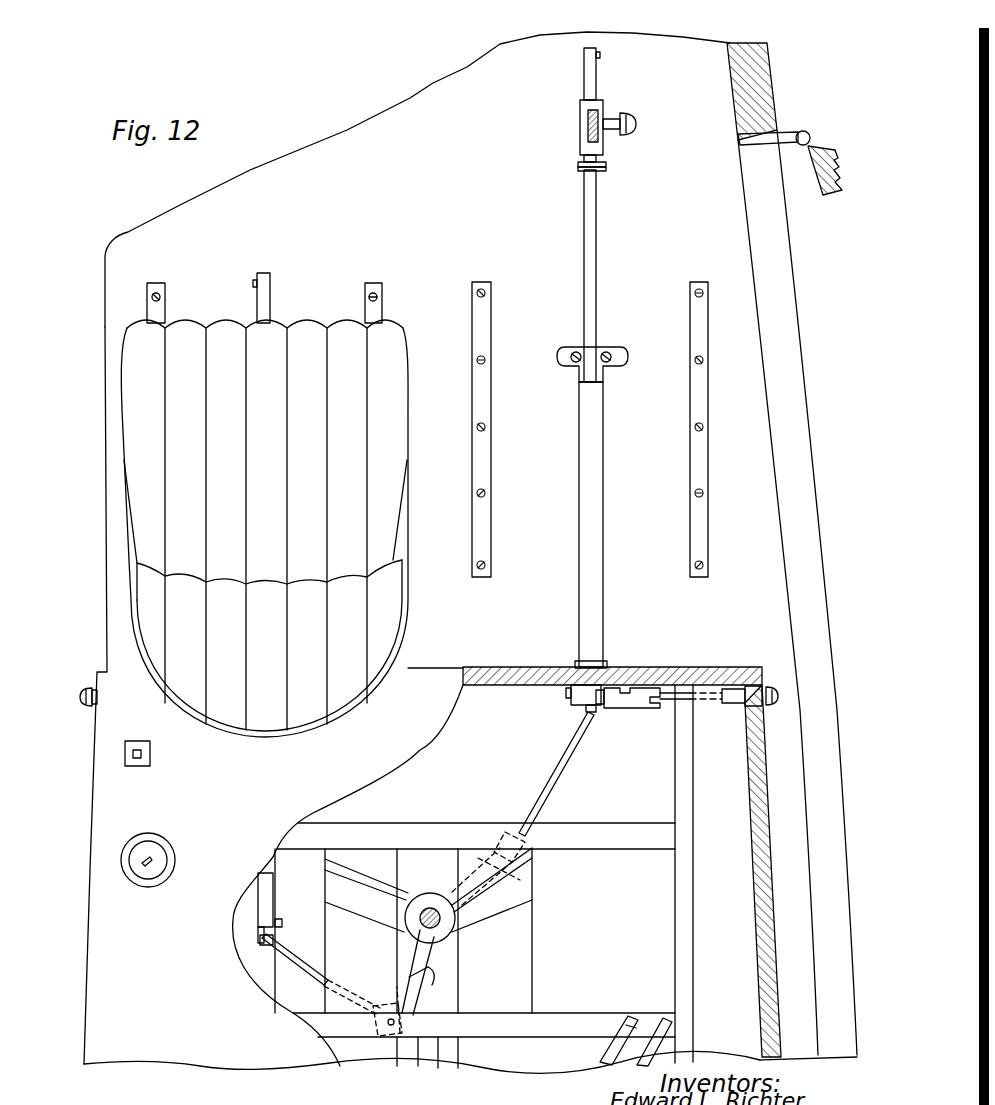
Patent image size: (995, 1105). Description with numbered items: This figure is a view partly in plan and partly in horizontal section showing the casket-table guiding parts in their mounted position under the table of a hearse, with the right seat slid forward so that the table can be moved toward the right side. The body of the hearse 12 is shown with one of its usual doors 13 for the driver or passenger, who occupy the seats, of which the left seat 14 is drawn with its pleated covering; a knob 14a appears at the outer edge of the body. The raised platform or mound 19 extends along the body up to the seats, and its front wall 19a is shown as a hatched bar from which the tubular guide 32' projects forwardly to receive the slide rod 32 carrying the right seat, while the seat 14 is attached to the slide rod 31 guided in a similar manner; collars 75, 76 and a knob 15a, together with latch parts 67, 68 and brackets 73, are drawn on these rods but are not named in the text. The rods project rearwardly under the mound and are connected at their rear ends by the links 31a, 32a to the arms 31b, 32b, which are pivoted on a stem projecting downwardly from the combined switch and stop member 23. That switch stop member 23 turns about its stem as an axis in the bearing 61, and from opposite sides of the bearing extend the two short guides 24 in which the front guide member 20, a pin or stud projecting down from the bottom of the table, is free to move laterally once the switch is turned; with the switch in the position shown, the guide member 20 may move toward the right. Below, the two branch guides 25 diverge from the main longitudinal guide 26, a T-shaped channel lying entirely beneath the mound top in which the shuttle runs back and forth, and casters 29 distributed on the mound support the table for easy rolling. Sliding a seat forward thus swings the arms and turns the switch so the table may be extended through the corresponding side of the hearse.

The body of a hearse 12 is at (768, 90).
The doors 13 is at (838, 197).
The seat 14 is at (399, 436).
The knob 14a is at (86, 686).
The adjusting knob 15a is at (771, 708).
The mound 19 is at (436, 672).
The front wall of the mound 19a is at (503, 667).
The front guide member 20 is at (436, 928).
The combined switch and stop member 23 is at (432, 902).
The short guides 24 is at (523, 888).
The guides 25 is at (622, 1020).
The main longitudinal guide 26 is at (440, 1052).
The casters 29 is at (152, 862).
The guide rod 31 is at (271, 292).
The link 31a is at (298, 962).
The arm 31b is at (427, 972).
The guide rod 32 is at (610, 215).
The tubular guide 32' is at (602, 507).
The link 32a is at (560, 772).
The arm 32b is at (482, 845).
The bearing 61 is at (412, 888).
The pin 67 is at (601, 706).
The slide 68 is at (625, 702).
The bracket 73 is at (570, 702).
The collar 75 is at (606, 164).
The collar 76 is at (606, 170).